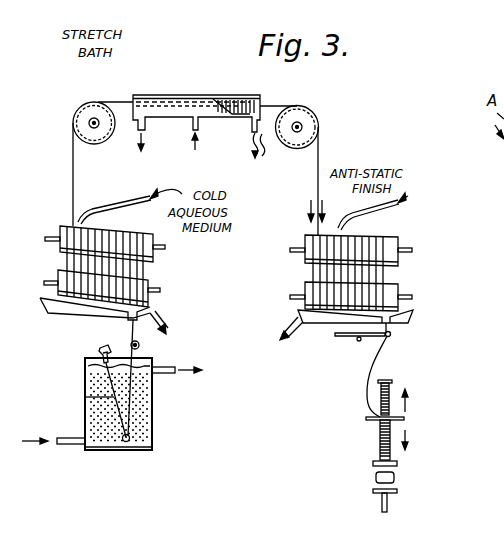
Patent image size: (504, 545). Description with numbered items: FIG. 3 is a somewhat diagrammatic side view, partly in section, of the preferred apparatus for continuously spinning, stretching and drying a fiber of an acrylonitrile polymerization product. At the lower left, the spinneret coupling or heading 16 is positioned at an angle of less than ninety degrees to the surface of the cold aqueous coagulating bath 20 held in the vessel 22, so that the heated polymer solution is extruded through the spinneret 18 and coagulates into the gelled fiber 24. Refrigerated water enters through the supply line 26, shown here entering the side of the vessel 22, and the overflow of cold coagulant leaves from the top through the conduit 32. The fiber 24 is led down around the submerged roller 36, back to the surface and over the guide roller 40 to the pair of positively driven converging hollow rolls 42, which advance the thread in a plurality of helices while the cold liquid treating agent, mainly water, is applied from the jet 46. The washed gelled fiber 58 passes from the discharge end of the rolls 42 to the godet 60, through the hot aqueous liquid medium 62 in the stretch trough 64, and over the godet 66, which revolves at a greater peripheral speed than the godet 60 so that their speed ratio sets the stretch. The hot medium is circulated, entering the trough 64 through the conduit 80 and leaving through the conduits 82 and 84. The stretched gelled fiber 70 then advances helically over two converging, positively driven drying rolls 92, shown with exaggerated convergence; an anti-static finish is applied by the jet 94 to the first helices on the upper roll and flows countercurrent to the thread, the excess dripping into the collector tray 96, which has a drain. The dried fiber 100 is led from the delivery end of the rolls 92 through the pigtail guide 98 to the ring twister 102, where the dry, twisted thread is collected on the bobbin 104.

The spinneret coupling or heading 16 is at (112, 344).
The spinneret 18 is at (102, 364).
The cold aqueous coagulating bath 20 is at (97, 420).
The vessel 22 is at (116, 404).
The gelled fiber 24 is at (86, 397).
The supply line 26 is at (70, 447).
The overflow conduit 32 is at (192, 368).
The submerged roller 36 is at (126, 443).
The guide roller 40 is at (140, 346).
The converging hollow rolls 42 is at (156, 258).
The jet 46 is at (98, 218).
The washed gelled fiber 58 is at (73, 178).
The godet 60 is at (77, 112).
The hot aqueous liquid medium 62 is at (200, 97).
The stretch trough 64 is at (176, 95).
The godet 66 is at (317, 120).
The stretched gelled fiber 70 is at (318, 150).
The inlet conduit 80 is at (206, 147).
The outlet conduit 82 is at (152, 146).
The outlet conduit 84 is at (267, 150).
The drying rolls 92 is at (402, 240).
The jet 94 is at (399, 207).
The collector tray 96 is at (326, 326).
The pigtail guide 98 is at (392, 334).
The dried fiber 100 is at (367, 403).
The ring twister 102 is at (405, 418).
The bobbin 104 is at (392, 382).